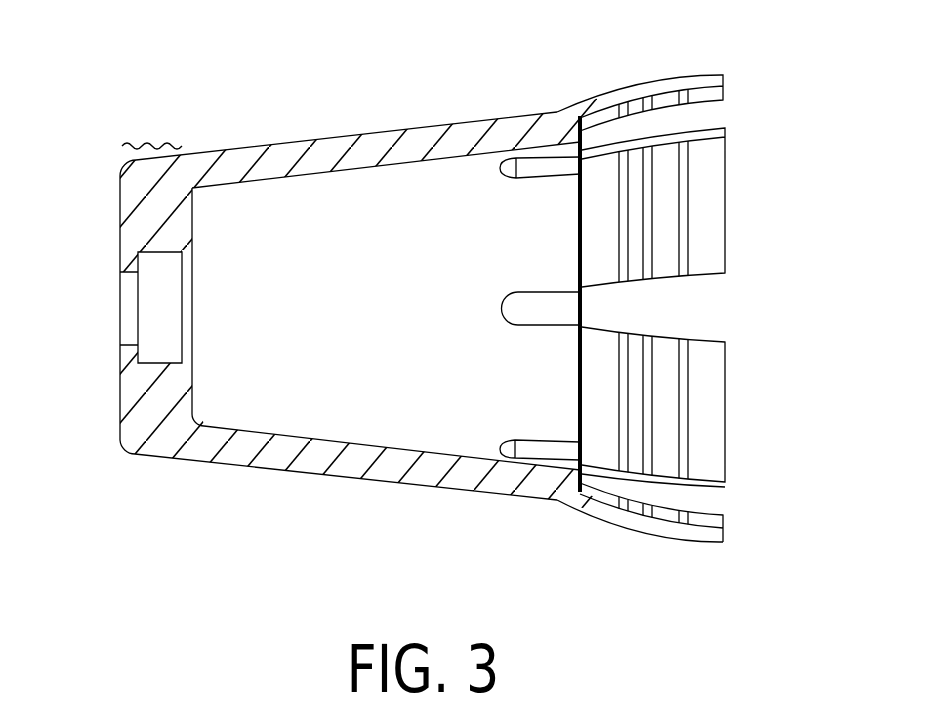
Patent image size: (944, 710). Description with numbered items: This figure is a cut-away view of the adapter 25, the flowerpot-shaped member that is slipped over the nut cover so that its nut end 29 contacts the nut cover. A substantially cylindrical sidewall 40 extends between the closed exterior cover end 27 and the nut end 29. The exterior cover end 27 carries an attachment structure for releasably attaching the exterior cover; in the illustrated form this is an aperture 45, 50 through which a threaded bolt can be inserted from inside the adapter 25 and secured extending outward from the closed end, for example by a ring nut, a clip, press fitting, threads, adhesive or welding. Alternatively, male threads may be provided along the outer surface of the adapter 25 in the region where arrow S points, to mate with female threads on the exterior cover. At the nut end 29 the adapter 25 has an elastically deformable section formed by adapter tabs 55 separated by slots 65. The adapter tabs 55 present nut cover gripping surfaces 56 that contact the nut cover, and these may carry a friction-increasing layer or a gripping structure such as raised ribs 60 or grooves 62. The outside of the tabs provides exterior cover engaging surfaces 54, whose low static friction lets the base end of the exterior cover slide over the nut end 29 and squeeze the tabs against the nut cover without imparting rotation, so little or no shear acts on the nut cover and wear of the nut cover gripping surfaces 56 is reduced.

The adapter 25 is at (427, 310).
The arrow S region S is at (145, 117).
The exterior cover end 27 is at (144, 304).
The nut end 29 is at (741, 80).
The sidewall 40 is at (328, 152).
The aperture 45 is at (160, 308).
The aperture 50 is at (130, 308).
The adapter tabs 55 is at (727, 410).
The nut cover gripping surfaces 56 is at (723, 523).
The exterior cover engaging surfaces 54 is at (645, 532).
The raised ribs 60 is at (673, 230).
The grooves 62 is at (650, 245).
The slots 65 is at (510, 291).